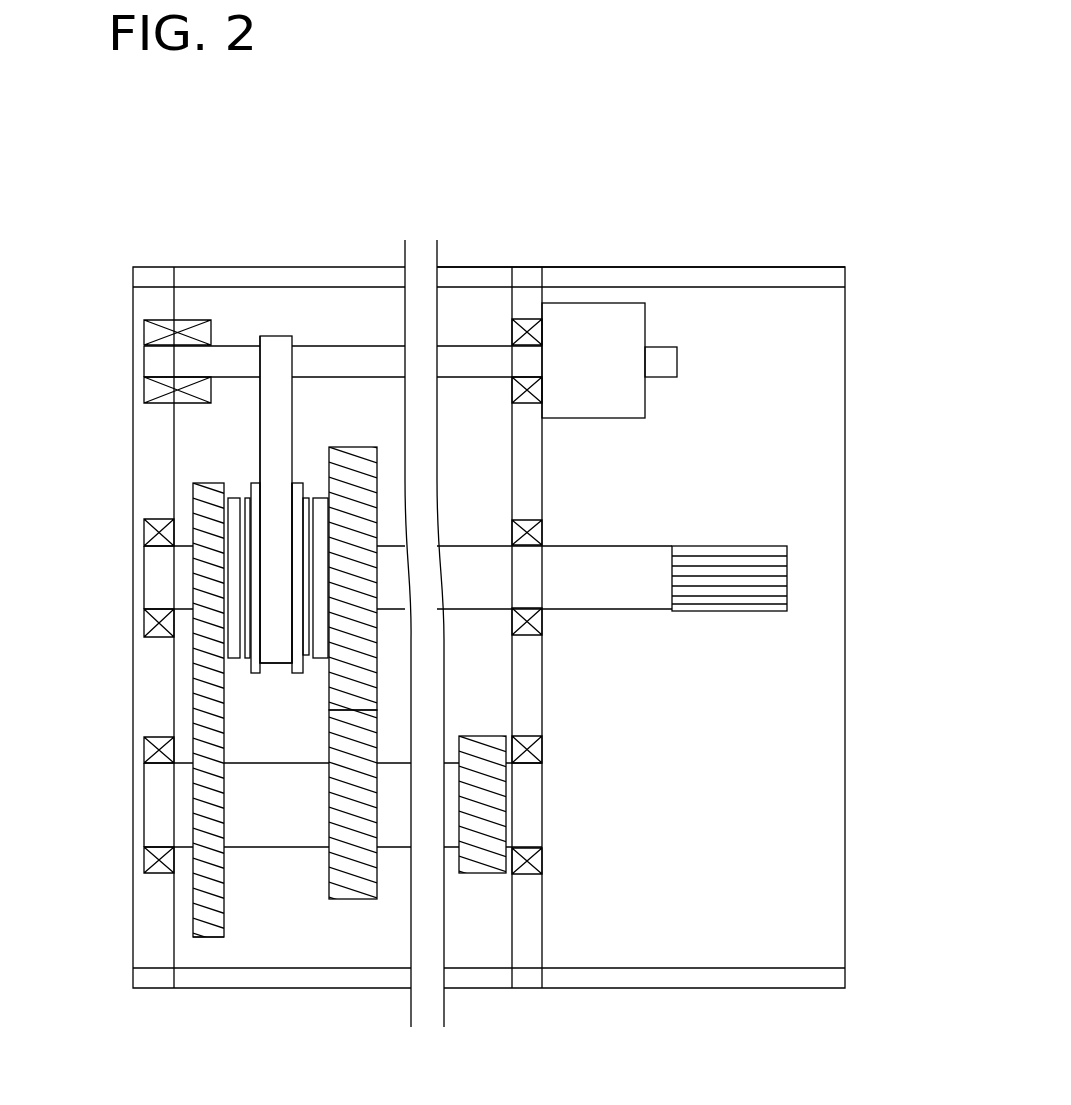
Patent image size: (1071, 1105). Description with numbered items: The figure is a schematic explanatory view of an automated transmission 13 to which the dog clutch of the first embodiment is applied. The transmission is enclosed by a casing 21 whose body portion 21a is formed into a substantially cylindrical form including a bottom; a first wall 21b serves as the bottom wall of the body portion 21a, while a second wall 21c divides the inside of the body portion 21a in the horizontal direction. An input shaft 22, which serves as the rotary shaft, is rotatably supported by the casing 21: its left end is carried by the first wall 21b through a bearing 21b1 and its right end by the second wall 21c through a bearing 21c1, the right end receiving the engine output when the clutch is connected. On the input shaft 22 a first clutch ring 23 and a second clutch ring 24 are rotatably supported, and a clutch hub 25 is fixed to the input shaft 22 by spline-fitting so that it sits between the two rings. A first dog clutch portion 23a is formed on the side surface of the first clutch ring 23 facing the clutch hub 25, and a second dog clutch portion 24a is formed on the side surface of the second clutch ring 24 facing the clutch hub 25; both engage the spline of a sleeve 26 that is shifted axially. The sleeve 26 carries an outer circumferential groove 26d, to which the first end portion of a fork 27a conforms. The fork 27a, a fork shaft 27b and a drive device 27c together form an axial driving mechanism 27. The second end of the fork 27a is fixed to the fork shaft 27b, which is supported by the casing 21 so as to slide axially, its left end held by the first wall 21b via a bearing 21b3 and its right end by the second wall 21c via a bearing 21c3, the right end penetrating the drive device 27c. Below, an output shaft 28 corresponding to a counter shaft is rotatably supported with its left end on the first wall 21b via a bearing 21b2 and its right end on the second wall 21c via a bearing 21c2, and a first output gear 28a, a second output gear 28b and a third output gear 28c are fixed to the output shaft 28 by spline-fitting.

The automated transmission 13 is at (675, 121).
The casing 21 is at (662, 268).
The body portion 21a is at (462, 267).
The first wall 21b is at (132, 453).
The bearing 21b1 is at (150, 528).
The bearing 21b2 is at (148, 862).
The bearing 21b3 is at (153, 332).
The second wall 21c is at (537, 481).
The bearing 21c1 is at (535, 534).
The bearing 21c2 is at (537, 855).
The bearing 21c3 is at (512, 340).
The input shaft 22 is at (600, 610).
The first clutch ring 23 is at (327, 677).
The first dog clutch portion 23a is at (313, 497).
The second clutch ring 24 is at (222, 671).
The second dog clutch portion 24a is at (235, 492).
The clutch hub 25 is at (243, 583).
The sleeve 26 is at (267, 615).
The outer circumferential groove 26d is at (245, 627).
The axial driving mechanism 27 is at (300, 337).
The fork 27a is at (260, 413).
The fork shaft 27b is at (362, 345).
The drive device 27c is at (648, 320).
The output shaft 28 is at (272, 847).
The first output gear 28a is at (357, 900).
The second output gear 28b is at (210, 935).
The third output gear 28c is at (483, 873).